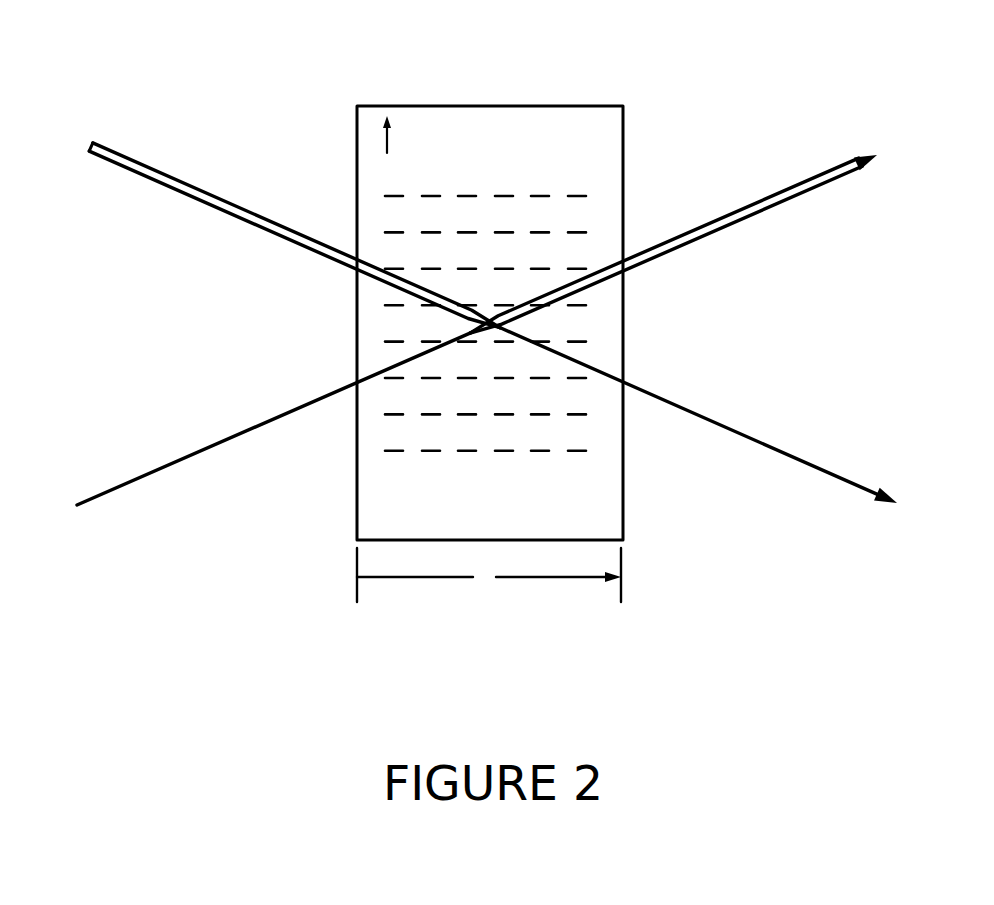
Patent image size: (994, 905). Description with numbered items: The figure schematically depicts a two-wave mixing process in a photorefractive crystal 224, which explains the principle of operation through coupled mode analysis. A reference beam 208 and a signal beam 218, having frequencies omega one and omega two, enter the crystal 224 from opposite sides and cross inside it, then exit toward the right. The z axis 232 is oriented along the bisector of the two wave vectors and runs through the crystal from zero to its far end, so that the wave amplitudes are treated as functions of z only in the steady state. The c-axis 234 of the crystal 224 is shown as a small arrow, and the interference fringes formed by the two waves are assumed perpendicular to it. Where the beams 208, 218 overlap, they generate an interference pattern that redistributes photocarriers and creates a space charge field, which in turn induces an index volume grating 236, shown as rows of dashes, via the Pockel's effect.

The reference beam 208 is at (273, 221).
The signal beam 218 is at (270, 422).
The photorefractive crystal 224 is at (572, 106).
The z axis 232 is at (552, 580).
The c-axis 234 is at (389, 140).
The index volume grating 236 is at (562, 467).